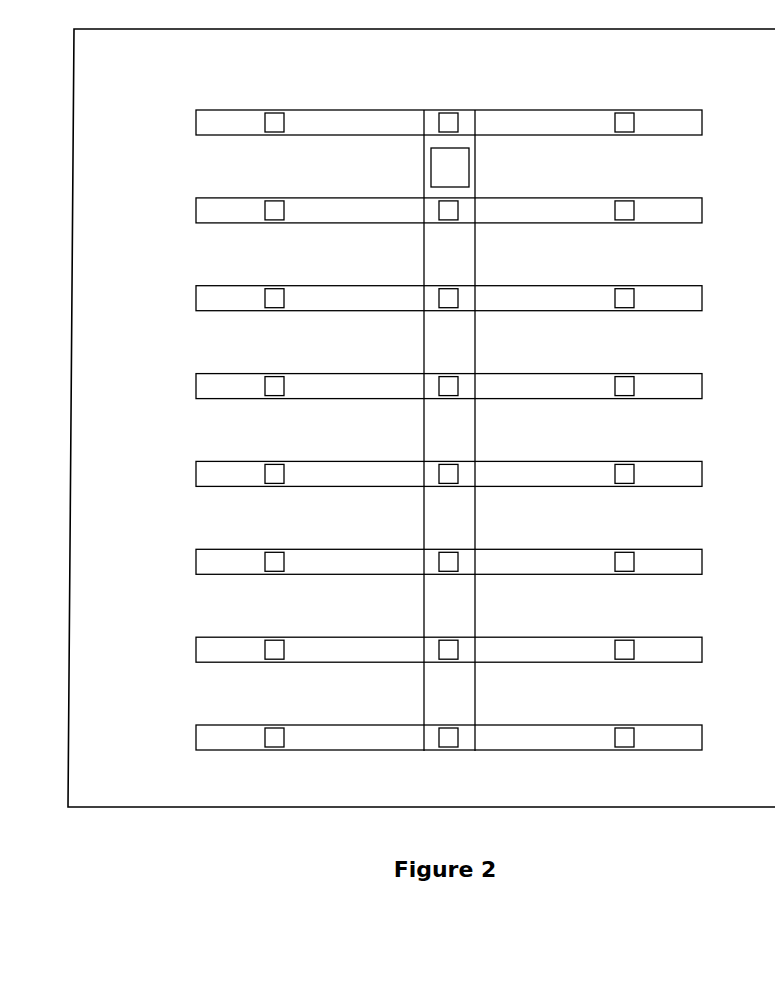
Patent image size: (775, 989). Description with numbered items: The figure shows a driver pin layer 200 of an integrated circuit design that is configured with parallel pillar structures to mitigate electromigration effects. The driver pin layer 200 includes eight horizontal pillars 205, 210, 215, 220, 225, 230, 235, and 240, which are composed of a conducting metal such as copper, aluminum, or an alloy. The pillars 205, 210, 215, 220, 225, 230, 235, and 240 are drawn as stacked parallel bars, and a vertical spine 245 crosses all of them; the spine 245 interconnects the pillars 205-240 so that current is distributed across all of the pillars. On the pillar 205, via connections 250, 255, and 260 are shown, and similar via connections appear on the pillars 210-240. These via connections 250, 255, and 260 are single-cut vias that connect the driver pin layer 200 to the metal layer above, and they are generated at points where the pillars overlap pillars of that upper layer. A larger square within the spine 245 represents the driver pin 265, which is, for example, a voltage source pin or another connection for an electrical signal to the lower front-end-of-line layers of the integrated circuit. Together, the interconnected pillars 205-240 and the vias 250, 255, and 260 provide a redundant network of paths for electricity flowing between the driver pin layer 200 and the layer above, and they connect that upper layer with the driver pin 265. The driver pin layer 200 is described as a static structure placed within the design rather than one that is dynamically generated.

The driver pin layer 200 is at (540, 60).
The pillar 205 is at (197, 122).
The pillar 210 is at (197, 210).
The pillar 215 is at (197, 298).
The pillar 220 is at (197, 386).
The pillar 225 is at (197, 474).
The pillar 230 is at (197, 562).
The pillar 235 is at (197, 650).
The pillar 240 is at (197, 738).
The spine 245 is at (423, 431).
The via connection 250 is at (275, 112).
The via connection 255 is at (450, 112).
The via connection 260 is at (624, 112).
The driver pin 265 is at (470, 167).